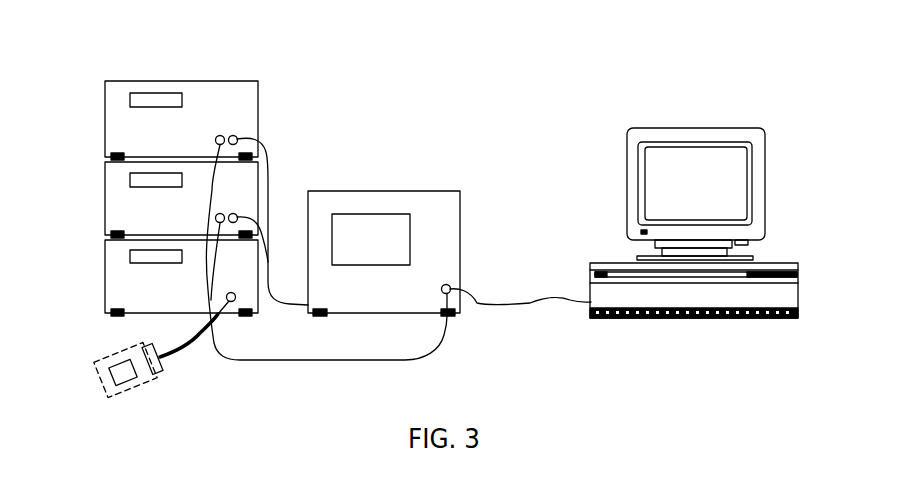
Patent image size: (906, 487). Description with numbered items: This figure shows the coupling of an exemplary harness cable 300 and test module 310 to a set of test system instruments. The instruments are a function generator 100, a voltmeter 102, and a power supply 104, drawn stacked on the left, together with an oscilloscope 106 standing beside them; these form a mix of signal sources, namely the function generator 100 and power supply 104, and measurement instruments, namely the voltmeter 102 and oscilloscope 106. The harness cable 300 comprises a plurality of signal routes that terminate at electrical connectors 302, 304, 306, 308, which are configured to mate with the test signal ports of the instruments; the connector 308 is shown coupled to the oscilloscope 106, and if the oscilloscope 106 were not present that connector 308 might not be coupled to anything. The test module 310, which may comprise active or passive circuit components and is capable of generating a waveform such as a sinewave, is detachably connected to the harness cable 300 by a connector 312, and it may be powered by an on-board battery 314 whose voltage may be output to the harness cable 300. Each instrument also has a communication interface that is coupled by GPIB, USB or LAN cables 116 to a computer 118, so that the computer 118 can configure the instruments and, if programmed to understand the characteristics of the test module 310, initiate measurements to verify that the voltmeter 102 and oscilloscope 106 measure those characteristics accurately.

The function generator 100 is at (105, 103).
The voltmeter 102 is at (104, 200).
The power supply 104 is at (104, 272).
The oscilloscope 106 is at (408, 192).
The GPIB, USB or LAN cable 116 is at (291, 302).
The computer 118 is at (780, 262).
The harness cable 300 is at (267, 366).
The electrical connector 302 is at (237, 146).
The electrical connector 304 is at (235, 226).
The electrical connector 306 is at (236, 300).
The electrical connector 308 is at (448, 285).
The test module 310 is at (137, 385).
The connector 312 is at (160, 370).
The battery 314 is at (100, 383).